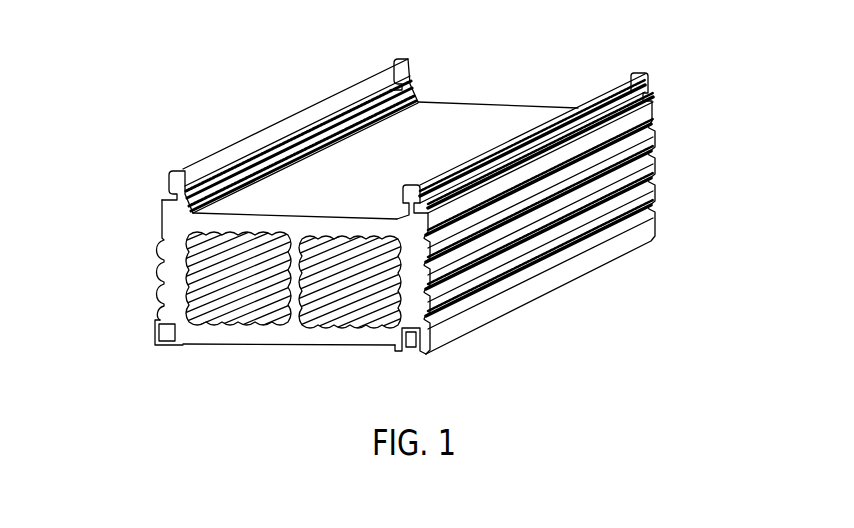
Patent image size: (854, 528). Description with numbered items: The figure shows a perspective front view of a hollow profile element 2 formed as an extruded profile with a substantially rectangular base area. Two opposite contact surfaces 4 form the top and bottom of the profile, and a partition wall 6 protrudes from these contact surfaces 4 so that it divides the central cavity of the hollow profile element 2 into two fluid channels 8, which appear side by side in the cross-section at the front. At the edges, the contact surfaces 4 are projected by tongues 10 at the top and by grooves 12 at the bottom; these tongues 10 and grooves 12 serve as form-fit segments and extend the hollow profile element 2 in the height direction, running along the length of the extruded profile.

The hollow profile element 2 is at (684, 154).
The contact surfaces 4 is at (478, 132).
The partition wall 6 is at (294, 258).
The fluid channels 8 is at (241, 318).
The tongues 10 is at (172, 192).
The grooves 12 is at (157, 338).